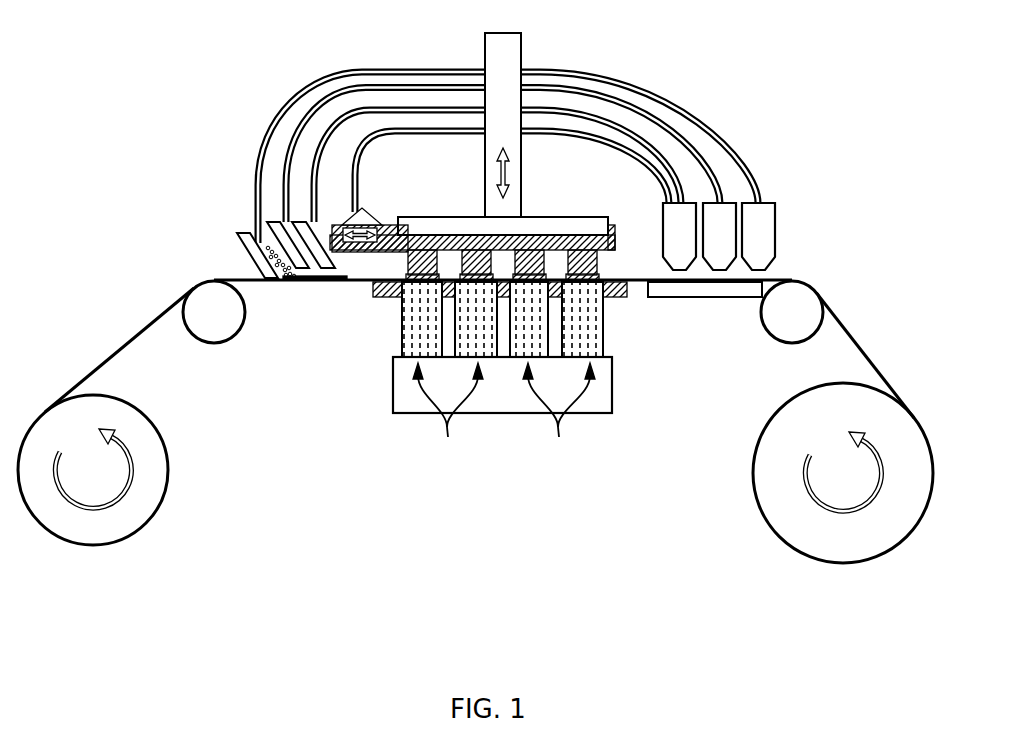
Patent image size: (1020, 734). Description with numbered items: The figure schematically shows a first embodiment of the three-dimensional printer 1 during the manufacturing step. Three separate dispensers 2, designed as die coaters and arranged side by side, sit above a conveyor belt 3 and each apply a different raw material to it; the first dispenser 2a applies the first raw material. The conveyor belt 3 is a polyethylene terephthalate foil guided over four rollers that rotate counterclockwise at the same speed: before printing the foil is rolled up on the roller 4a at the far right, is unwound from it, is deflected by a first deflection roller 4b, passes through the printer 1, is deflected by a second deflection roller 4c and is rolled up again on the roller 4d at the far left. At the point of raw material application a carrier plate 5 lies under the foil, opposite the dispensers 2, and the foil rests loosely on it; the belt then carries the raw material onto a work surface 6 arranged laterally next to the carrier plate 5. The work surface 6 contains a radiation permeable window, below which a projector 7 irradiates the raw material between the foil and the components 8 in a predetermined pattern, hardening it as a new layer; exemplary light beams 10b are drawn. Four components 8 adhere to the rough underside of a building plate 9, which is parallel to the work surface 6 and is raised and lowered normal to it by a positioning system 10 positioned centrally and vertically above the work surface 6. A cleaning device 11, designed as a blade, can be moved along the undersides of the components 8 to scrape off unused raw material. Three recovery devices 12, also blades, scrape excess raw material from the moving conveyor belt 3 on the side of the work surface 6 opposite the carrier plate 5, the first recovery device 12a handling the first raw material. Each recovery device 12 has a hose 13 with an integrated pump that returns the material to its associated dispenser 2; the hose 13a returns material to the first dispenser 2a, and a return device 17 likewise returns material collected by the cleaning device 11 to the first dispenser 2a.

The 3D printer 1 is at (187, 99).
The dispensers 2 is at (745, 236).
The first dispenser 2a is at (700, 190).
The conveyor belt 3 is at (860, 345).
The roller 4a is at (765, 497).
The first deflection roller 4b is at (780, 333).
The second deflection roller 4c is at (218, 333).
The roller 4d is at (150, 498).
The carrier plate 5 is at (697, 290).
The work surface 6 is at (382, 300).
The projector 7 is at (602, 385).
The components 8 is at (600, 268).
The building plate 9 is at (452, 217).
The positioning system 10 is at (515, 51).
The light beams 10b is at (504, 413).
The cleaning device 11 is at (365, 212).
The recovery devices 12 is at (252, 248).
The first recovery device 12a is at (316, 292).
The hose 13 is at (282, 130).
The hose 13a is at (673, 155).
The return device 17 is at (562, 135).